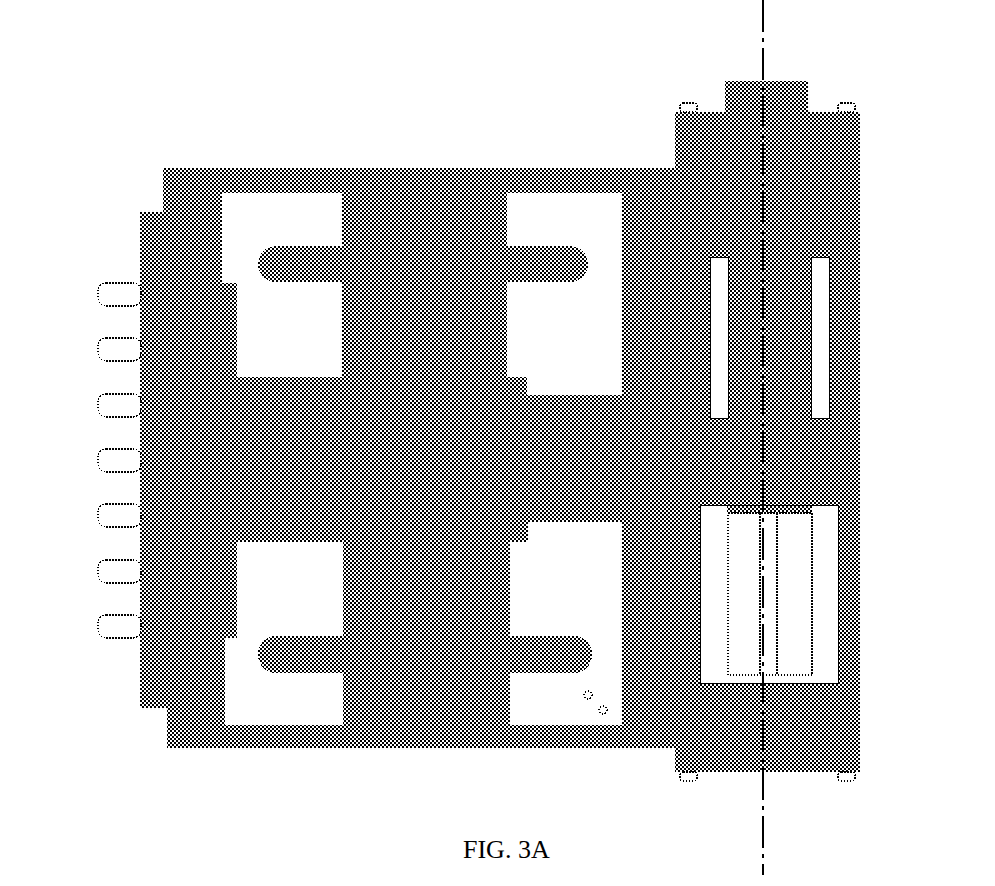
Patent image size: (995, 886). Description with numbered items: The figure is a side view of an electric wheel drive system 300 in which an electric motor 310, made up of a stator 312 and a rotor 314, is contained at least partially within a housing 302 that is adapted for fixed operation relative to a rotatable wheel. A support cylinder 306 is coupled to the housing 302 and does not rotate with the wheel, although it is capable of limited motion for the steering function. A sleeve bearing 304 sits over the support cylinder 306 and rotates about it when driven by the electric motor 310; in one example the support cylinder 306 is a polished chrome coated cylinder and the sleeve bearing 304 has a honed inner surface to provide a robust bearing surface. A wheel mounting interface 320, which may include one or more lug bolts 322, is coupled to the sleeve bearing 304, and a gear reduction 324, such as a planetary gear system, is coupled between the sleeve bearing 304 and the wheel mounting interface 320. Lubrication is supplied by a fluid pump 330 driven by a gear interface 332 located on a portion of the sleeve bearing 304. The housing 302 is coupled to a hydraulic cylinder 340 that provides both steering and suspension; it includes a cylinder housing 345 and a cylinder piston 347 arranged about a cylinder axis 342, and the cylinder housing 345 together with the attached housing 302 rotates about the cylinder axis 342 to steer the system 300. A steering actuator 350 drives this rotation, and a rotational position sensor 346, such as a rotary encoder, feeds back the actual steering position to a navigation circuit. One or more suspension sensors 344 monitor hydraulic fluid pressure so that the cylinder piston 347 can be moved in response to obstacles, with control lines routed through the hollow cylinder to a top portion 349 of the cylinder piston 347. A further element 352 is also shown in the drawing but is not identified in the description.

The electric wheel drive system 300 is at (375, 130).
The housing 302 is at (443, 748).
The sleeve bearing 304 is at (338, 546).
The support cylinder 306 is at (305, 546).
The electric motor 310 is at (342, 303).
The stator 312 is at (342, 213).
The rotor 314 is at (342, 352).
The wheel mounting interface 320 is at (148, 657).
The lug bolts 322 is at (115, 623).
The gear reduction 324 is at (227, 698).
The fluid pump 330 is at (527, 378).
The gear interface 332 is at (530, 543).
The hydraulic cylinder 340 is at (866, 508).
The cylinder axis 342 is at (757, 50).
The suspension sensor 344 is at (742, 768).
The cylinder housing 345 is at (847, 348).
The rotational position sensor 346 is at (678, 756).
The cylinder piston 347 is at (810, 302).
The top portion of the cylinder piston 349 is at (783, 82).
The steering actuator 350 is at (815, 600).
The inner component 352 is at (775, 632).